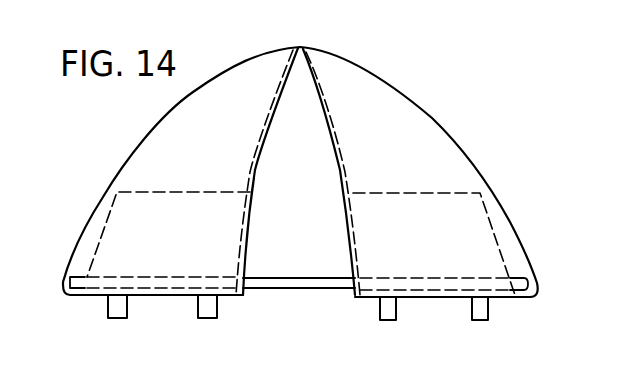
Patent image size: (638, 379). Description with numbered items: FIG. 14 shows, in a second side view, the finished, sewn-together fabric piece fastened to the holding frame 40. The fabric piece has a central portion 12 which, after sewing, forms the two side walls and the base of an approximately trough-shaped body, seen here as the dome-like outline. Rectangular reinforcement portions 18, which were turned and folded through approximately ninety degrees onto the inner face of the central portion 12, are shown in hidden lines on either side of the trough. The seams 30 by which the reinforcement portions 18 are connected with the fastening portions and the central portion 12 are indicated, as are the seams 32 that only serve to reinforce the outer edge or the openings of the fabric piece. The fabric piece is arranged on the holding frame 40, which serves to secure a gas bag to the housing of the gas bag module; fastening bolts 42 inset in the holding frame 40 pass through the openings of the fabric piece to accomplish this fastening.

The central portion 12 is at (412, 138).
The reinforcement portion 18 is at (115, 232).
The seam 30 is at (447, 190).
The reinforcing seam 32 is at (333, 102).
The holding frame 40 is at (300, 286).
The fastening bolt 42 is at (472, 317).